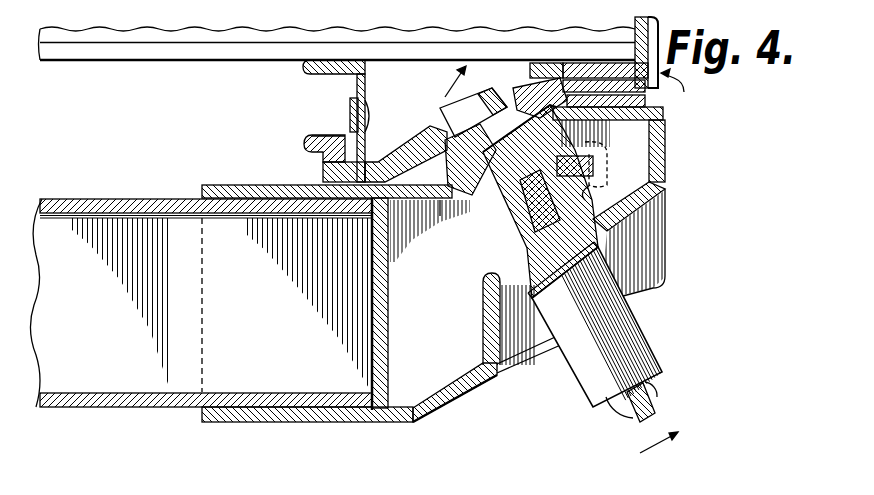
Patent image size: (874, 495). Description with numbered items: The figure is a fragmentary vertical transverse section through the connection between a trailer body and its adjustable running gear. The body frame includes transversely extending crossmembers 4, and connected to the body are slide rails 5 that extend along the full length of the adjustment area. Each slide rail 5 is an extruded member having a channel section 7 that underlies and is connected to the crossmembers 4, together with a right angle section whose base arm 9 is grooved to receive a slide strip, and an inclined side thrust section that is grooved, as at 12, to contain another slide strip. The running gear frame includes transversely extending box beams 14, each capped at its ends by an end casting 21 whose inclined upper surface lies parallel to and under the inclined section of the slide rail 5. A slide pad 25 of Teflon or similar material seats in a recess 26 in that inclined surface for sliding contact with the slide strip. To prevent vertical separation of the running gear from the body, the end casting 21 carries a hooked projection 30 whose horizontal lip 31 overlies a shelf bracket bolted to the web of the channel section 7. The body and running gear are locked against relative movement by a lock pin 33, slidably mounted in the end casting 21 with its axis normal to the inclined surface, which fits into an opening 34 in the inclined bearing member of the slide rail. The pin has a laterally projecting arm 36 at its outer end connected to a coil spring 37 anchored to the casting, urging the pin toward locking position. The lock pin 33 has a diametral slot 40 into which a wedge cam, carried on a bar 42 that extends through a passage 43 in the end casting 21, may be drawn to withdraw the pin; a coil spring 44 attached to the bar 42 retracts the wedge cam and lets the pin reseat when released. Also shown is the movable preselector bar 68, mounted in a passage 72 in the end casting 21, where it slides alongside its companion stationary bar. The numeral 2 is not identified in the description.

The frame 2 is at (306, 423).
The crossmember 4 is at (173, 50).
The slide rail 5 is at (570, 260).
The channel section 7 is at (365, 84).
The base arm 9 is at (583, 63).
The groove 12 is at (424, 145).
The box beam 14 is at (111, 198).
The end casting 21 is at (473, 402).
The slide pad 25 is at (426, 200).
The recess 26 is at (443, 213).
The hooked projection 30 is at (304, 164).
The horizontal lip 31 is at (325, 135).
The lock pin 33 is at (454, 108).
The opening 34 is at (441, 133).
The laterally projecting arm 36 is at (654, 413).
The coil spring 37 is at (657, 391).
The diametral slot 40 is at (522, 92).
The bar 42 is at (480, 213).
The passage 43 is at (597, 183).
The coil spring 44 is at (489, 243).
The bar 68 is at (595, 199).
The passage 72 is at (599, 151).